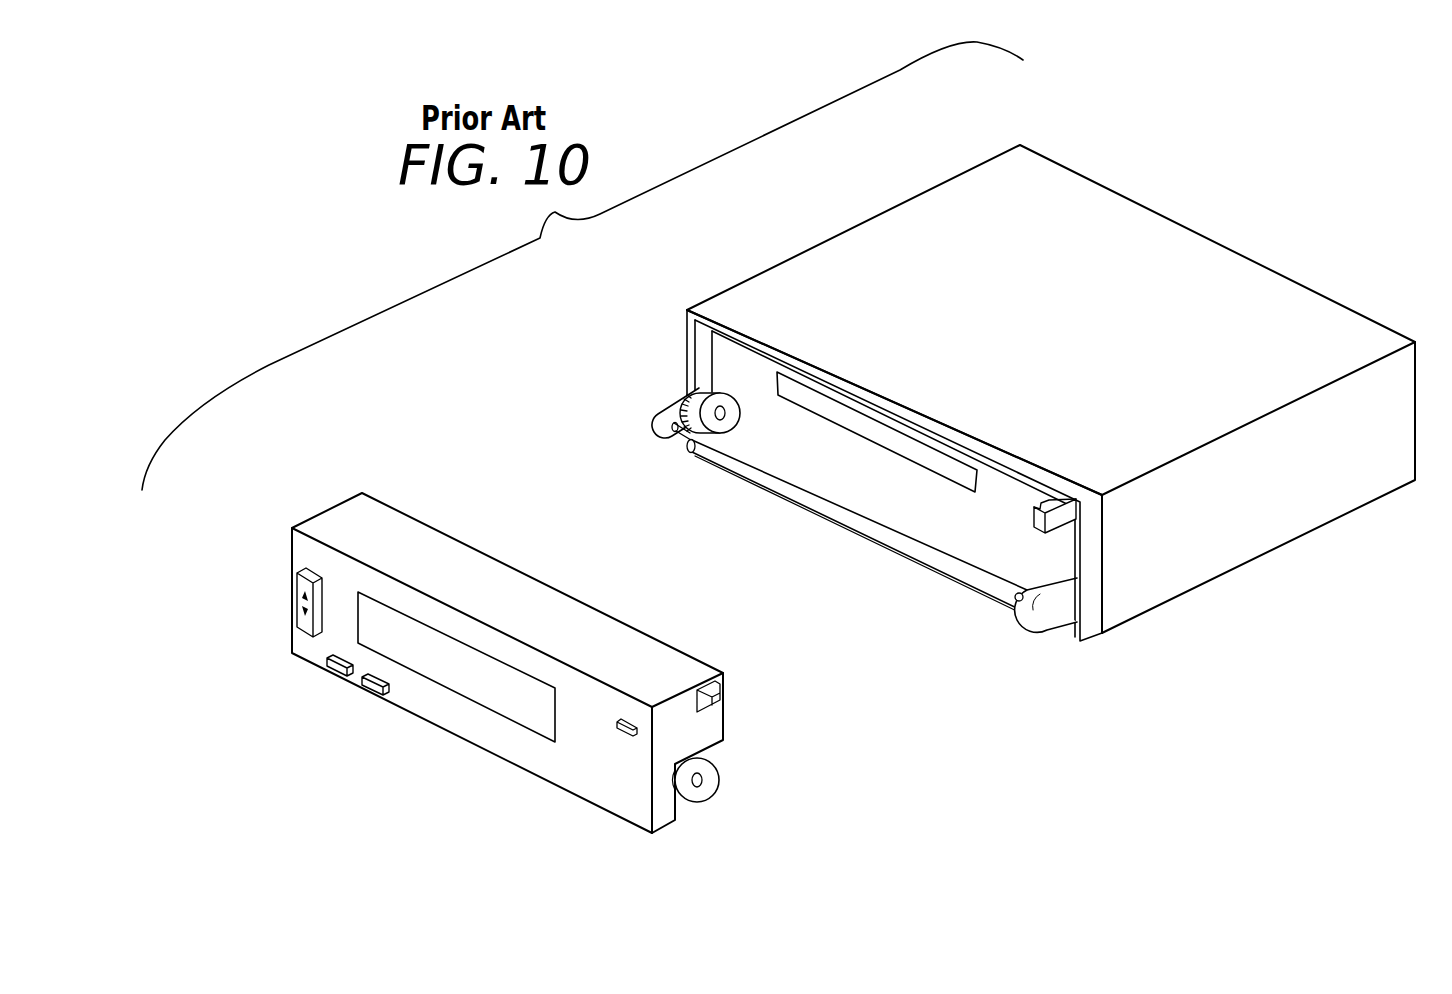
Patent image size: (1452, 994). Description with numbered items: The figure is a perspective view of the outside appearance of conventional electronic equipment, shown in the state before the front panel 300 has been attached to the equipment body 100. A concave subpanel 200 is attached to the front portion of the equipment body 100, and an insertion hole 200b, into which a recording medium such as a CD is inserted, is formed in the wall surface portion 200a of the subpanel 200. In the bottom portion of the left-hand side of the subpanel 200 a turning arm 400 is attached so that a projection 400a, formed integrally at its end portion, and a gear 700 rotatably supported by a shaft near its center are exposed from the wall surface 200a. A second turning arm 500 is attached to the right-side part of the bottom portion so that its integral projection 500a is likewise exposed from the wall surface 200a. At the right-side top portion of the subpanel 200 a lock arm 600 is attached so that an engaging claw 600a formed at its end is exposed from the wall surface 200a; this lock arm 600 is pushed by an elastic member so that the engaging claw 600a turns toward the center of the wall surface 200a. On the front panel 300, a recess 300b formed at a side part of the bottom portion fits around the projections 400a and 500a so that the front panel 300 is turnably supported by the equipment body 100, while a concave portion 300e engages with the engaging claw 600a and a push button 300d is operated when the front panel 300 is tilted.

The equipment body 100 is at (871, 219).
The subpanel 200 is at (1095, 604).
The wall surface portion 200a is at (930, 526).
The insertion hole 200b is at (875, 401).
The front panel 300 is at (570, 612).
The recess 300b is at (713, 783).
The push button 300d is at (622, 735).
The concave portion 300e is at (718, 690).
The turning arm 400 is at (662, 408).
The projection 400a is at (681, 441).
The turning arm 500 is at (1047, 620).
The projection 500a is at (1013, 604).
The lock arm 600 is at (1062, 522).
The engaging claw 600a is at (1039, 503).
The gear 700 is at (718, 433).